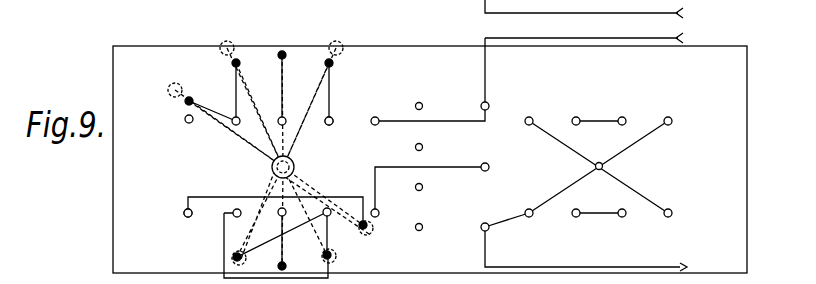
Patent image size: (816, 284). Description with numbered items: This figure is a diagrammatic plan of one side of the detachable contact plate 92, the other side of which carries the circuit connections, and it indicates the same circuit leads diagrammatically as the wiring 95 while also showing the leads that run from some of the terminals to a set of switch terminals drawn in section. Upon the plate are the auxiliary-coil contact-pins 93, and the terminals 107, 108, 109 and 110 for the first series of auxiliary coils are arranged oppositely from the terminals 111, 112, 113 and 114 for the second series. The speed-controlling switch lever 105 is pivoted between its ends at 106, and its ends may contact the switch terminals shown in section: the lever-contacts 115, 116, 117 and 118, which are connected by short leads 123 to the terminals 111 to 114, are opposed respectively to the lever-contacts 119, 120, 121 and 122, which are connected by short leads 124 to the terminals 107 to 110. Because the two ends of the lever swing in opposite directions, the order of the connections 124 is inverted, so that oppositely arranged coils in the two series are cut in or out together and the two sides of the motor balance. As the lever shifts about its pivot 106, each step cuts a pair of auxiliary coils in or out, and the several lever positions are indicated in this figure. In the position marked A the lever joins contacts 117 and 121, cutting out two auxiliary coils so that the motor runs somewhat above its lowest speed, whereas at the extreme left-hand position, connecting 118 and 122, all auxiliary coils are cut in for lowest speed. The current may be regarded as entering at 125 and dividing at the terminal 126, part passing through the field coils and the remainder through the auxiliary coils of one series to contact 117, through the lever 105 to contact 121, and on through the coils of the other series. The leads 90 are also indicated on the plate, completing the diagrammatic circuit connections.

The pivot pin 90 is at (488, 165).
The plate 92 is at (709, 162).
The auxiliary-coil contact-pins 93 is at (331, 124).
The wiring 95 is at (612, 125).
The speed-controlling switch lever 105 is at (326, 66).
The pivot 106 is at (272, 168).
The terminal 107 is at (329, 216).
The terminal 108 is at (280, 216).
The terminal 109 is at (225, 209).
The terminal 110 is at (185, 214).
The terminal 111 is at (331, 119).
The terminal 112 is at (284, 113).
The terminal 113 is at (229, 128).
The terminal 114 is at (185, 117).
The lever-contact 115 is at (333, 63).
The lever-contact 116 is at (290, 46).
The lever-contact 117 is at (239, 60).
The lever-contact 118 is at (191, 98).
The lever-contact 119 is at (233, 257).
The lever-contact 120 is at (287, 268).
The lever-contact 121 is at (332, 257).
The lever-contact 122 is at (368, 227).
The leads 123 is at (235, 94).
The leads 124 is at (207, 197).
The current entry 125 is at (634, 278).
The terminal 126 is at (489, 106).
The lever position A is at (273, 157).